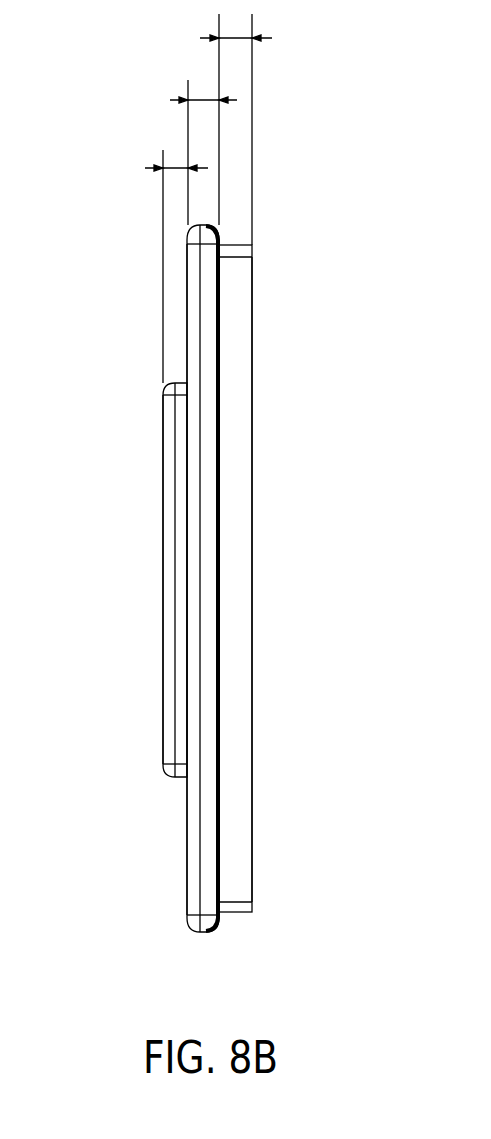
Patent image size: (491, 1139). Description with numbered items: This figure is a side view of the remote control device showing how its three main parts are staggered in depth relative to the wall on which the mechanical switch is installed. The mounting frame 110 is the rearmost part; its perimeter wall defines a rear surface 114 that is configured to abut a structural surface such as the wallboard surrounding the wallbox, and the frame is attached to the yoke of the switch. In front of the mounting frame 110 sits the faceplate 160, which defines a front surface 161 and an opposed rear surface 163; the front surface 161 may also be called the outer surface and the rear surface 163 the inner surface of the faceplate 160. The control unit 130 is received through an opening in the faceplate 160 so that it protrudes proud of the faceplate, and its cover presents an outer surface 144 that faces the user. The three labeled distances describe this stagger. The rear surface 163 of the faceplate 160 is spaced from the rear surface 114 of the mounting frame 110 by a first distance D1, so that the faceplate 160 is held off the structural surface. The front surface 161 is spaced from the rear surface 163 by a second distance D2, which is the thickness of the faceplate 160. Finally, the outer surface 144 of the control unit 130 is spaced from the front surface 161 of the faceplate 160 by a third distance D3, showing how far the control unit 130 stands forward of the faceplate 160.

The mounting frame 110 is at (253, 485).
The rear surface 114 is at (253, 675).
The control unit 130 is at (163, 582).
The outer surface 144 is at (163, 477).
The faceplate 160 is at (208, 933).
The front surface 161 is at (188, 832).
The rear surface 163 is at (219, 830).
The first distance D1 is at (238, 40).
The second distance D2 is at (205, 103).
The third distance D3 is at (177, 170).